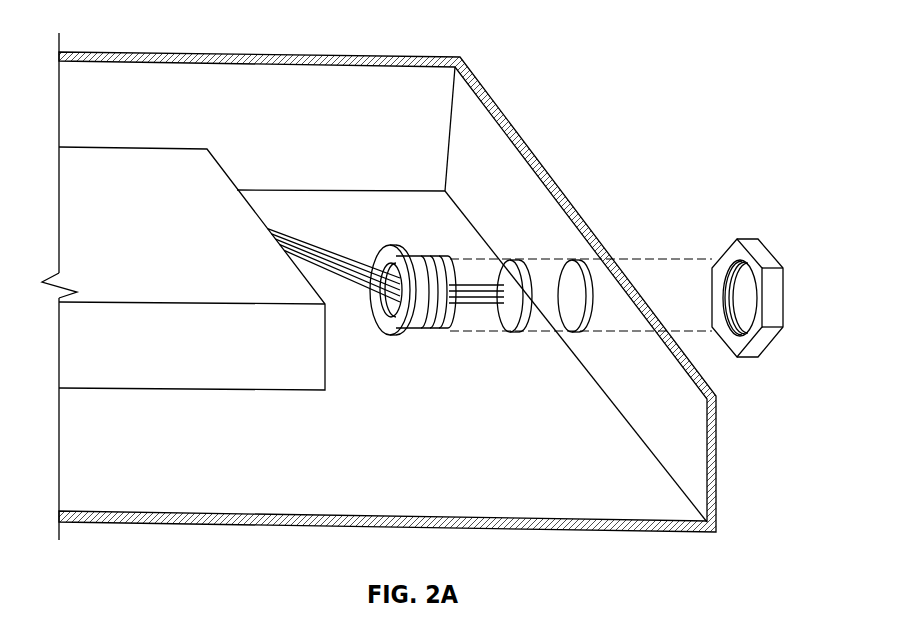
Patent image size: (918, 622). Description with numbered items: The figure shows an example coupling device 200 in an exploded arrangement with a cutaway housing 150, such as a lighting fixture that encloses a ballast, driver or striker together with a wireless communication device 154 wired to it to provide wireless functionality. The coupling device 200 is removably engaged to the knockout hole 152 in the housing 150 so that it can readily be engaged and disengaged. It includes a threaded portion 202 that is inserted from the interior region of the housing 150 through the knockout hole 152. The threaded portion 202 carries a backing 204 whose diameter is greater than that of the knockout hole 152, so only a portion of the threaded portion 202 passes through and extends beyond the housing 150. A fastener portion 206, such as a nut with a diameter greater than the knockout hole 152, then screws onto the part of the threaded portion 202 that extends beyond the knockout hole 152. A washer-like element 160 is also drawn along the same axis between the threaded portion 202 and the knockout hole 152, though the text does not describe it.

The housing 150 is at (333, 57).
The knockout hole 152 is at (593, 297).
The wireless communication device 154 is at (153, 147).
The sealing washer 160 is at (515, 323).
The coupling device 200 is at (536, 318).
The threaded portion 202 is at (445, 343).
The backing 204 is at (388, 333).
The fastener portion 206 is at (743, 358).